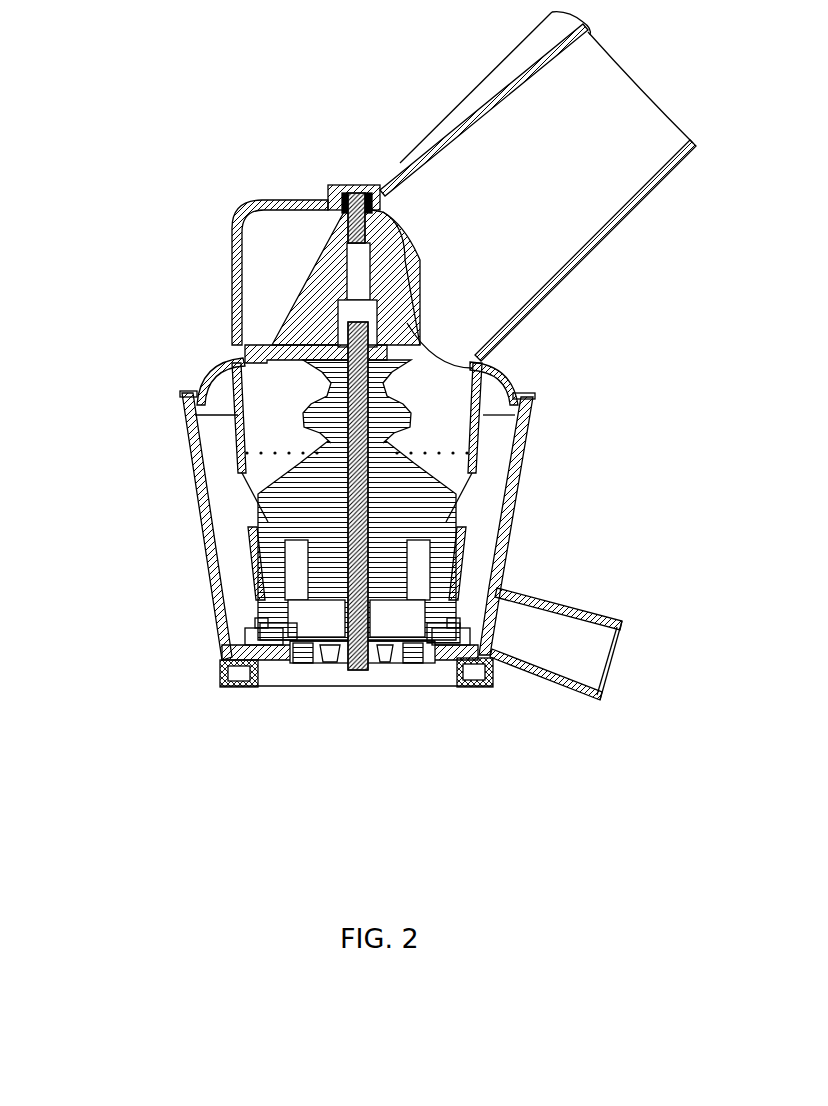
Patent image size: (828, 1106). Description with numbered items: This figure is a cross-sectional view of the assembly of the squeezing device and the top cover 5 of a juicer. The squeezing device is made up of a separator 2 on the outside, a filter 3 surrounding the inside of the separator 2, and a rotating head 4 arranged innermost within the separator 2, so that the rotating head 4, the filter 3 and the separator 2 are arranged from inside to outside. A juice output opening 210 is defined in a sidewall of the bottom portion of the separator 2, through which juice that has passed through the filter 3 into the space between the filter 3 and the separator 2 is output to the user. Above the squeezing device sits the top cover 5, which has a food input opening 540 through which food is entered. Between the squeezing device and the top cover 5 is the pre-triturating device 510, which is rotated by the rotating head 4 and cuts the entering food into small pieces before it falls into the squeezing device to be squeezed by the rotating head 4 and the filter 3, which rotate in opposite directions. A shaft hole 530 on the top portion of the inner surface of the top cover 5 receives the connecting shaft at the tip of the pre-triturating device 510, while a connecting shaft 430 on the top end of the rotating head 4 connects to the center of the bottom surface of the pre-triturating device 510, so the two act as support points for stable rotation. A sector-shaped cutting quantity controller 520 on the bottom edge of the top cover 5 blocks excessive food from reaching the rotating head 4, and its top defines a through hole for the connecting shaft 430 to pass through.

The separator 2 is at (207, 555).
The filter 3 is at (480, 443).
The rotating head 4 is at (373, 482).
The top cover 5 is at (280, 237).
The juice output opening 210 is at (533, 643).
The connecting shaft 430 is at (363, 340).
The pre-triturating device 510 is at (300, 307).
The cutting quantity controller 520 is at (283, 352).
The shaft hole 530 is at (347, 205).
The food input opening 540 is at (562, 210).